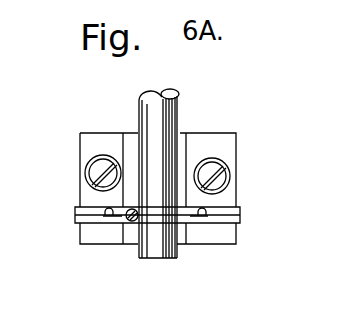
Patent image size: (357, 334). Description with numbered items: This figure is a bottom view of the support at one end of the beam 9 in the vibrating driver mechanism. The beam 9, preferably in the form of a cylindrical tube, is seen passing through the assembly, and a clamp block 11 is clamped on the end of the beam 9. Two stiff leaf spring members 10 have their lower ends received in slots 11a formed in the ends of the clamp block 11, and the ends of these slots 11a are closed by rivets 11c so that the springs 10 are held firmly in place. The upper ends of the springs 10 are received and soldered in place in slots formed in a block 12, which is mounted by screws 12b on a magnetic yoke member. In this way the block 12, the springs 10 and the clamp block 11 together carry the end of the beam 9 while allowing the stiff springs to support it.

The block 12 is at (91, 140).
The screws 12b is at (92, 166).
The leaf spring members 10 is at (90, 206).
The clamp block 11 is at (150, 216).
The slots 11a is at (110, 215).
The rivets 11c is at (80, 229).
The beam 9 is at (162, 258).